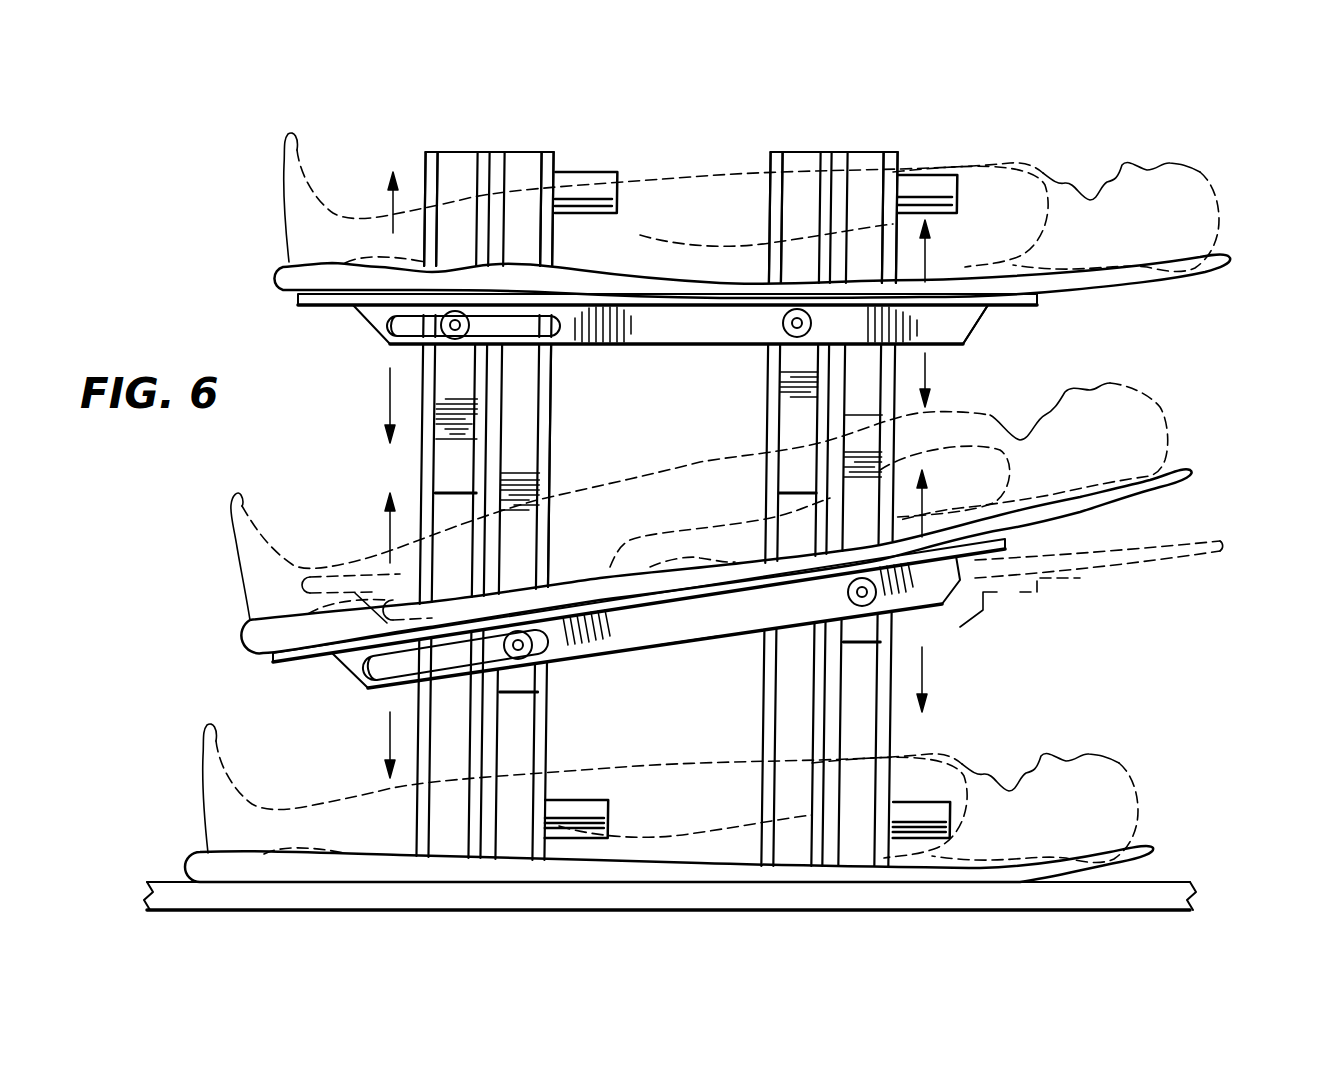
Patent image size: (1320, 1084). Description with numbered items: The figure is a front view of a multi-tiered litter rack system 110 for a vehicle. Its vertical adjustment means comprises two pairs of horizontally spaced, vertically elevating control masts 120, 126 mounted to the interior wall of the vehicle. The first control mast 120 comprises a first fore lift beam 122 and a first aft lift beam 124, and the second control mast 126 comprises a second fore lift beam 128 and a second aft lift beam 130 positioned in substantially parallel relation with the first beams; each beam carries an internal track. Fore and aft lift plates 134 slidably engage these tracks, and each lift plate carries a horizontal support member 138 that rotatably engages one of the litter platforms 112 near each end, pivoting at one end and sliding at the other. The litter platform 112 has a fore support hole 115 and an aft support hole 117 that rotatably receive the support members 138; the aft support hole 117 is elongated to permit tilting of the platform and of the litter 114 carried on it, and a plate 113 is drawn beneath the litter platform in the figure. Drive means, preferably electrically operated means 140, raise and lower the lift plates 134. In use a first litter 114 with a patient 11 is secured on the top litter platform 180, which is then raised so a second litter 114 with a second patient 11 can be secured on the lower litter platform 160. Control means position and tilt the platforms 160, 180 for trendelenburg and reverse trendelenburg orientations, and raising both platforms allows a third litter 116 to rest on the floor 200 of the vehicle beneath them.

The patient 11 is at (1198, 170).
The litter rack system 110 is at (553, 448).
The litter platform 112 is at (983, 333).
The support plate 113 is at (700, 350).
The litter 114 is at (1223, 258).
The fore support hole 115 is at (780, 345).
The third litter 116 is at (197, 863).
The aft support hole 117 is at (397, 345).
The first control mast 120 is at (515, 150).
The first fore lift beam 122 is at (877, 152).
The first aft lift beam 124 is at (528, 152).
The second control mast 126 is at (467, 150).
The second fore lift beam 128 is at (800, 152).
The second aft lift beam 130 is at (452, 150).
The fore and aft lift plates 134 is at (515, 478).
The horizontal support member 138 is at (469, 327).
The electrically operated means 140 is at (597, 177).
The lower litter platform 160 is at (692, 645).
The top litter platform 180 is at (987, 313).
The floor 200 is at (1163, 882).